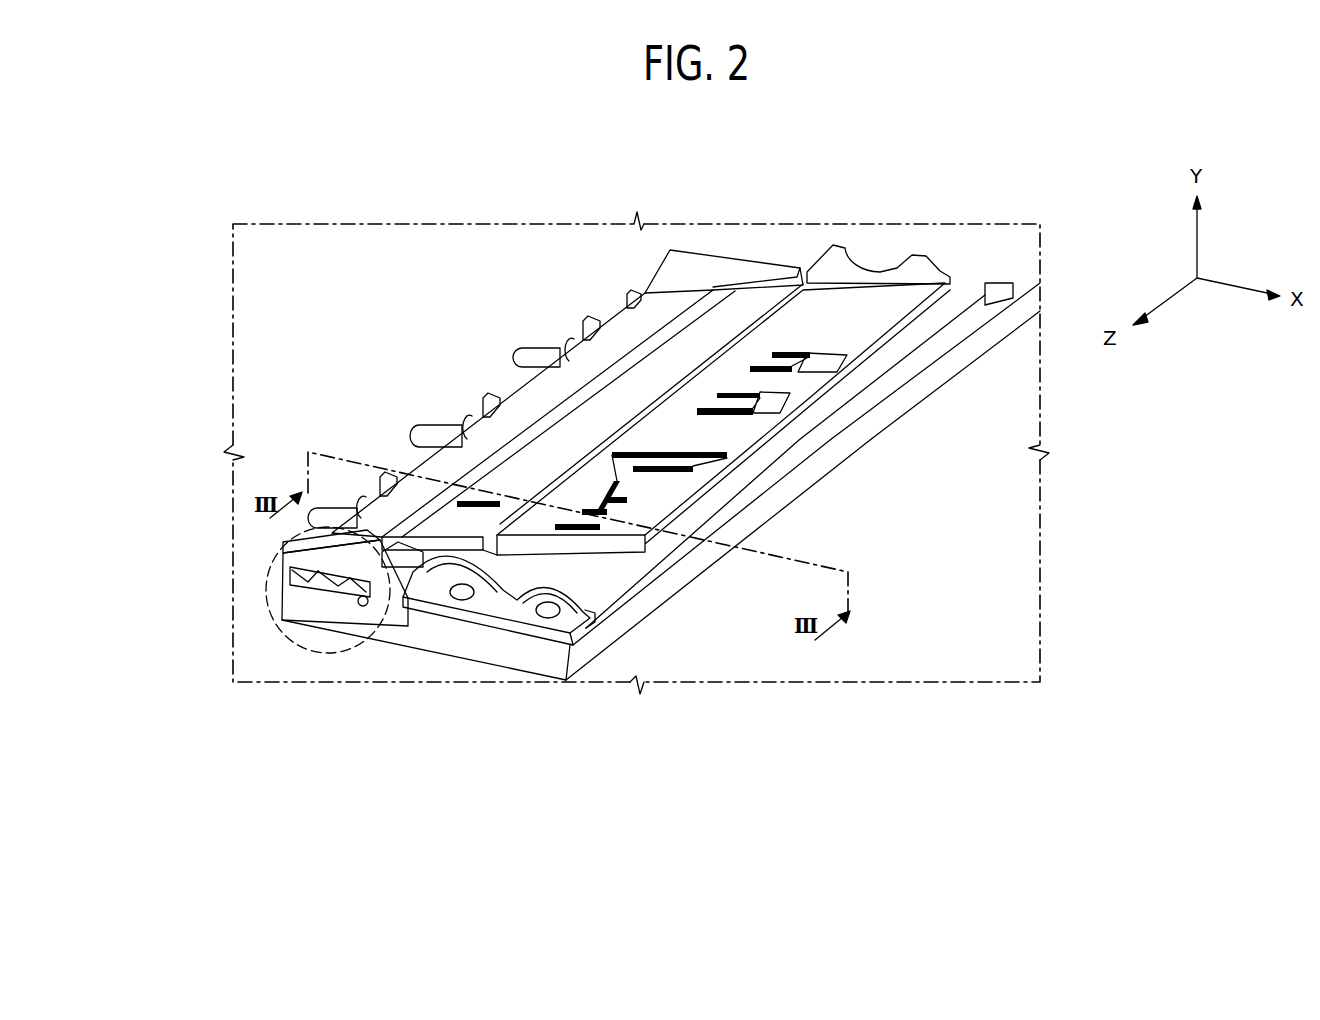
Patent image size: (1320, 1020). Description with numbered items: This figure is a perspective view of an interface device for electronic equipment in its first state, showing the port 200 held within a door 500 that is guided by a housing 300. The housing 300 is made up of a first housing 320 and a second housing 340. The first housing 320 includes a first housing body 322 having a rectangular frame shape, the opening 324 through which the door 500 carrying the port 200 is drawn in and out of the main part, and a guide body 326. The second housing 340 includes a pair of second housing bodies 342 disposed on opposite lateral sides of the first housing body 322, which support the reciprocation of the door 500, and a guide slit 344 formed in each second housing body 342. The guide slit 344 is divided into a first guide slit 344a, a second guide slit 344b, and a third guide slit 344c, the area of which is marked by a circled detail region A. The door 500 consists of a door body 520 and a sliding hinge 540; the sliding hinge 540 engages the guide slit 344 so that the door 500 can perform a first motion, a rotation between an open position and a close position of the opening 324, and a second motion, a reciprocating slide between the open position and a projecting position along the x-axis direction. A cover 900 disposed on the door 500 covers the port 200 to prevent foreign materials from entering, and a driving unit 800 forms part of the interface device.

The port 200 is at (807, 354).
The housing 300 is at (644, 568).
The first housing 320 is at (661, 545).
The first housing body 322 is at (697, 503).
The opening 324 is at (645, 545).
The guide body 326 is at (590, 322).
The second housing 340 is at (419, 693).
The second housing body 342 is at (452, 635).
The guide slit 344 is at (330, 684).
The first guide slit 344a is at (291, 575).
The second guide slit 344b is at (364, 594).
The third guide slit 344c is at (339, 580).
The door 500 is at (366, 520).
The door body 520 is at (650, 415).
The sliding hinge 540 is at (295, 582).
The driving unit 800 is at (338, 510).
The cover 900 is at (693, 322).
The detail region A is at (280, 620).